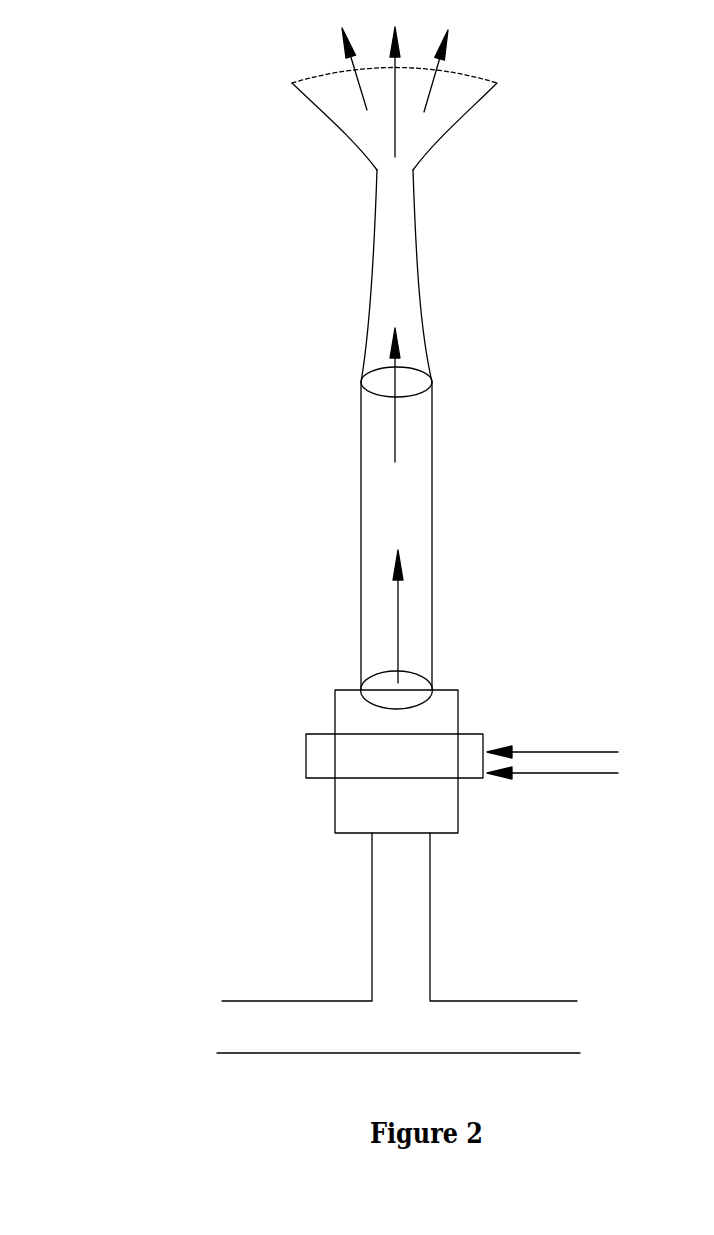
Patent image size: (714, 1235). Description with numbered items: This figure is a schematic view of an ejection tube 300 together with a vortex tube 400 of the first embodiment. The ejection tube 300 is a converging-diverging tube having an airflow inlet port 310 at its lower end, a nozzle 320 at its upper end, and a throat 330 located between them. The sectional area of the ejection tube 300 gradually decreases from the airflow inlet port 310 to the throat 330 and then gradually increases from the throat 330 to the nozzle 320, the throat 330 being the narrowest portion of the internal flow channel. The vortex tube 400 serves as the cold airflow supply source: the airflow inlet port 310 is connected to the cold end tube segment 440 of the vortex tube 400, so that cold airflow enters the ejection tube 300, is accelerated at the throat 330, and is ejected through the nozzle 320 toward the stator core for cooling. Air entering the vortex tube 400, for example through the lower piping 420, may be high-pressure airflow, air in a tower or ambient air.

The ejection tube 300 is at (305, 361).
The airflow inlet port 310 is at (361, 377).
The nozzle 320 is at (305, 75).
The throat 330 is at (377, 170).
The cold end tube segment 440 is at (432, 632).
The vortex tube 400 is at (410, 871).
The supply pipe 420 is at (372, 902).